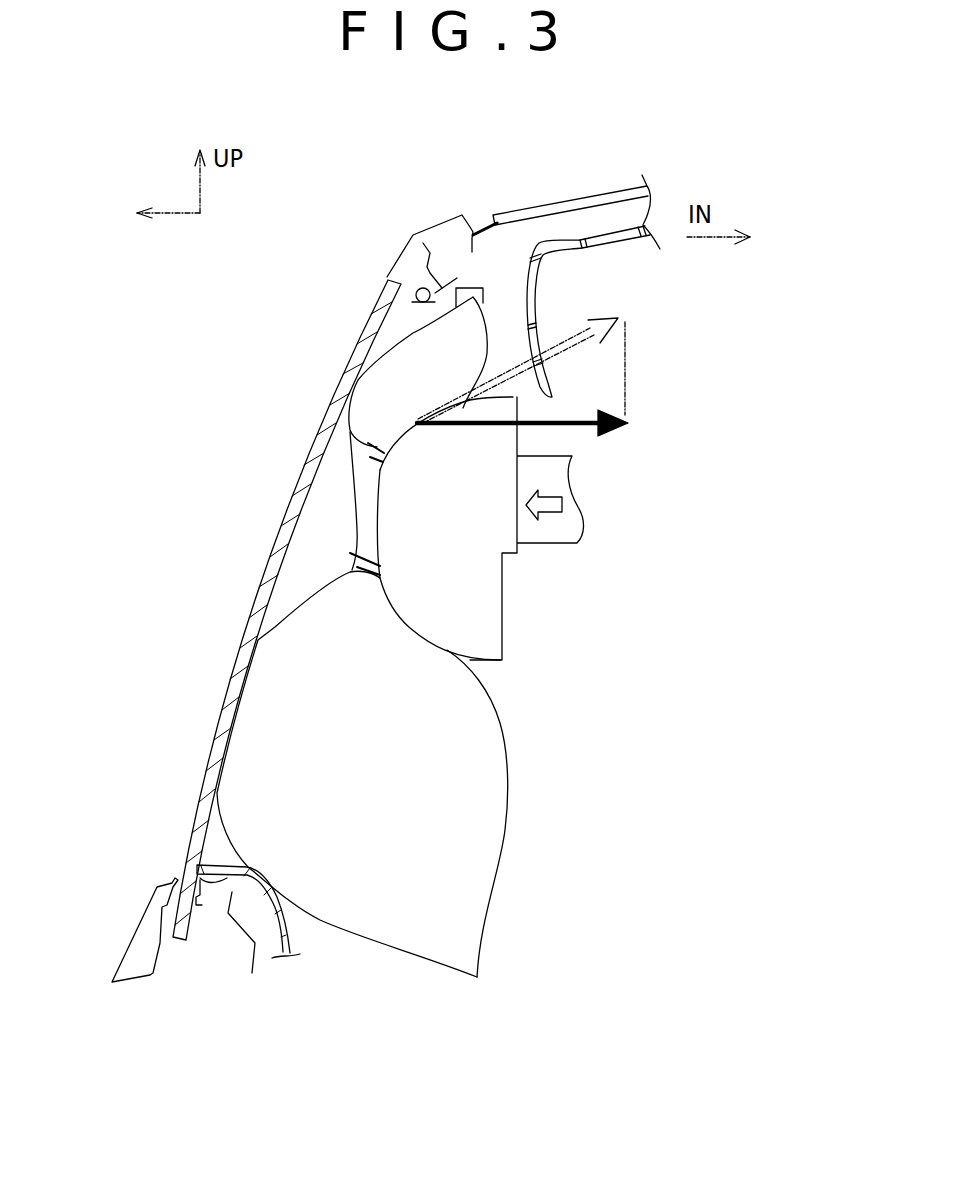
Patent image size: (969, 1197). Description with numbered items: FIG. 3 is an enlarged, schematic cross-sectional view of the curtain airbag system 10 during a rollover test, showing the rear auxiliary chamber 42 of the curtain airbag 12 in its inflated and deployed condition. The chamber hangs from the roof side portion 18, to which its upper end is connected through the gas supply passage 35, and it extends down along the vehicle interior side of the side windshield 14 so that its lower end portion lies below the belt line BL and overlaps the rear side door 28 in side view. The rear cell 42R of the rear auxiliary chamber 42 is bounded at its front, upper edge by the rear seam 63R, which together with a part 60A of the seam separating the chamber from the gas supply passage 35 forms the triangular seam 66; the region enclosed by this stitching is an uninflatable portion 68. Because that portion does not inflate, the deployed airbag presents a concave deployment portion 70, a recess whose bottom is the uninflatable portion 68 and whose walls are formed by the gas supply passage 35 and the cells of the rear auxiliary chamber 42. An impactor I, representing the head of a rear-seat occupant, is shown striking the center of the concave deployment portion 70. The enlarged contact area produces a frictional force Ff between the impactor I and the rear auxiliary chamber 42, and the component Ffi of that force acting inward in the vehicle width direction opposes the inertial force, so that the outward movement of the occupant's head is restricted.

The curtain airbag system 10 is at (707, 380).
The curtain airbag 12 is at (482, 940).
The side windshield 14 is at (253, 607).
The roof side portion 18 is at (448, 215).
The rear side door 28 is at (293, 937).
The gas supply passage 35 is at (405, 330).
The rear auxiliary chamber 42 is at (452, 687).
The rear cell 42R is at (497, 863).
The part of the seam 60A is at (353, 450).
The rear seam 63R is at (347, 567).
The triangular seam 66 is at (242, 440).
The uninflatable portion 68 is at (357, 500).
The concave deployment portion 70 is at (372, 452).
The impactor I is at (485, 615).
The belt line BL is at (228, 860).
The frictional force Ff is at (562, 337).
The component of the frictional force Ffi is at (576, 428).